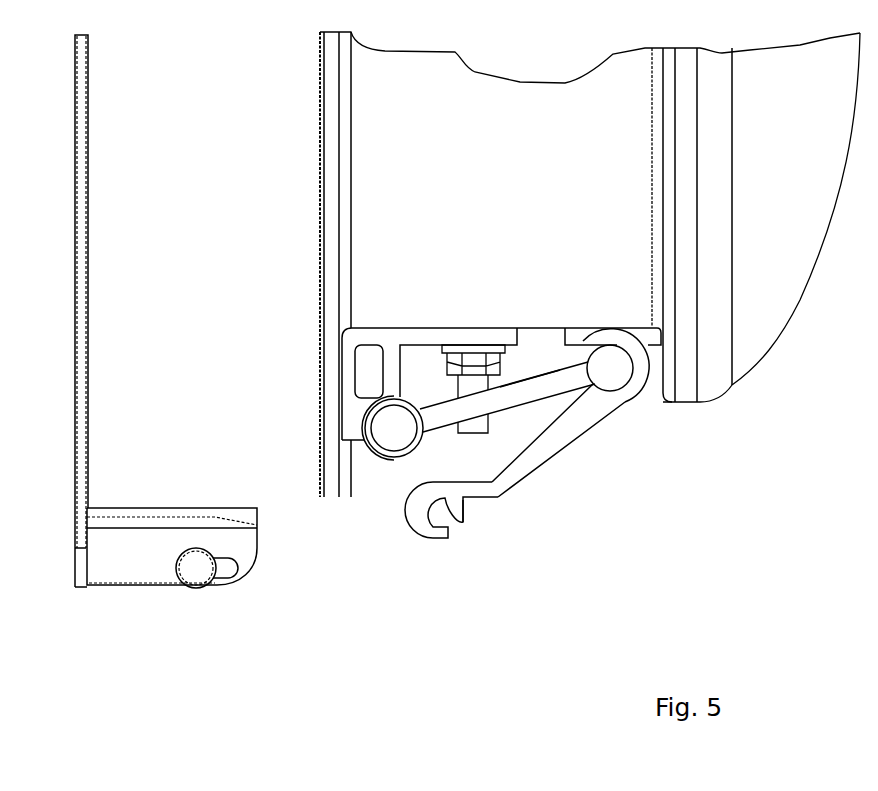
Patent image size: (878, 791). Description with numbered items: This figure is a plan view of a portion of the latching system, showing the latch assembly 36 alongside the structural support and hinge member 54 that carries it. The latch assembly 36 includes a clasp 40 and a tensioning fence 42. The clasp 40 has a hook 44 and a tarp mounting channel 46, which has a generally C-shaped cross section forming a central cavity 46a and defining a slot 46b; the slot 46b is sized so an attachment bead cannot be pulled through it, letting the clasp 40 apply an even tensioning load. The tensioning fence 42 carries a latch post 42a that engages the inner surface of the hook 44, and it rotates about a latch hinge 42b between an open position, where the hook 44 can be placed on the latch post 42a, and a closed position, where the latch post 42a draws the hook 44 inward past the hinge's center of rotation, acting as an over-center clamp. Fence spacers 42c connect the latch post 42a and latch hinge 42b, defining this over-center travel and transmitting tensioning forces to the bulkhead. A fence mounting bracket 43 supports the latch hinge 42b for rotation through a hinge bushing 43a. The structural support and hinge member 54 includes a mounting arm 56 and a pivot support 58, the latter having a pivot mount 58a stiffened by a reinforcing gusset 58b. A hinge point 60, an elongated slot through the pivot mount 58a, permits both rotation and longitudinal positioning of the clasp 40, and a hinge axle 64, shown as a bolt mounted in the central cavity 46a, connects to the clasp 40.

The latch assembly 36 is at (618, 496).
The clasp 40 is at (603, 435).
The tensioning fence 42 is at (513, 410).
The latch post 42a is at (612, 368).
The latch hinge 42b is at (390, 433).
The fence spacers 42c is at (540, 388).
The fence mounting bracket 43 is at (402, 332).
The hinge bushing 43a is at (375, 410).
The hook 44 is at (648, 388).
The tarp mounting channel 46 is at (415, 535).
The central cavity 46a is at (428, 508).
The slot 46b is at (455, 522).
The structural support and hinge member 54 is at (132, 346).
The mounting arm 56 is at (90, 172).
The pivot support 58 is at (252, 522).
The pivot mount 58a is at (102, 560).
The reinforcing gusset 58b is at (152, 510).
The hinge point 60 is at (232, 563).
The hinge axle 64 is at (203, 573).